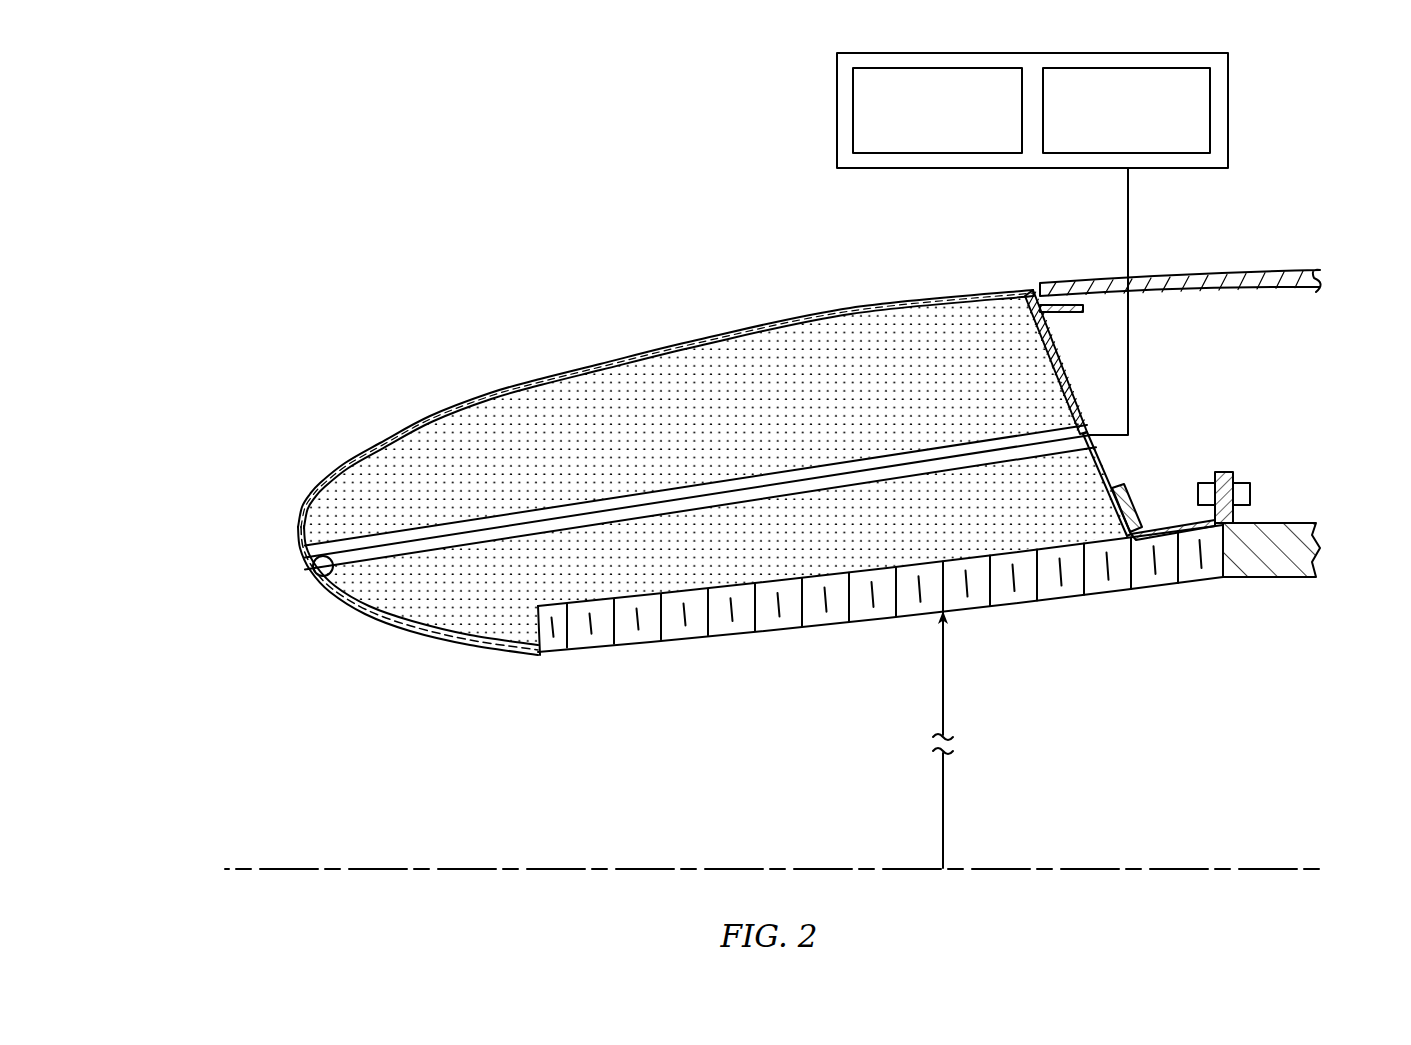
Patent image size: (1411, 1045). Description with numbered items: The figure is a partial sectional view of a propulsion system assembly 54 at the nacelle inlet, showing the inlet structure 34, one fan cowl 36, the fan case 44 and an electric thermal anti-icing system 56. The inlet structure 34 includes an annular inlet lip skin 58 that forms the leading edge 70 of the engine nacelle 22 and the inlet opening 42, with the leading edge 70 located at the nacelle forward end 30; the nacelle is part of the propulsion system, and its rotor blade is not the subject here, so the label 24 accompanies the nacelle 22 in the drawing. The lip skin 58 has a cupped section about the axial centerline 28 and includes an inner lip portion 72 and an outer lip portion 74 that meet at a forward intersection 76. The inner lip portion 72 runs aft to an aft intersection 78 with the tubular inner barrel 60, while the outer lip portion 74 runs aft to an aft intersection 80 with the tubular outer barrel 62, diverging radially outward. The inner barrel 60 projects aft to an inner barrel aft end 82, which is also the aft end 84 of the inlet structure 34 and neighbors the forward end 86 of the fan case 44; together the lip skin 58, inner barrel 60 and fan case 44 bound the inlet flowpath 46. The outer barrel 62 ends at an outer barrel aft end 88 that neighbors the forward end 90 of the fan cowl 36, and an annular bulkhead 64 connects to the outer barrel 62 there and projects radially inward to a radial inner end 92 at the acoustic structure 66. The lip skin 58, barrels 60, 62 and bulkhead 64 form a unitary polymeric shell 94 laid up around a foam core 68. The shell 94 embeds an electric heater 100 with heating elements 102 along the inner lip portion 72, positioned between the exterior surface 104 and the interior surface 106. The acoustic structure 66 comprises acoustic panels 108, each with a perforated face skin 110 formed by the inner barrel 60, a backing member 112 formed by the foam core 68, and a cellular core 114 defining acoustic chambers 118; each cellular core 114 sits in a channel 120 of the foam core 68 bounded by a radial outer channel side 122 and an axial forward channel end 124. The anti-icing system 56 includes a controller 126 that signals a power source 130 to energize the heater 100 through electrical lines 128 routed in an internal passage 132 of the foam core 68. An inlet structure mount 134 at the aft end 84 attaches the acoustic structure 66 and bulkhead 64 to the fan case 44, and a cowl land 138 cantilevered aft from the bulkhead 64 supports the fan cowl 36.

The engine nacelle 22 is at (271, 206).
The rotor blade 24 is at (312, 244).
The axial centerline 28 is at (1300, 865).
The nacelle forward end 30 is at (581, 419).
The inlet structure 34 is at (657, 308).
The fan cowl 36 is at (1180, 239).
The inlet opening 42 is at (297, 762).
The fan case 44 is at (1318, 540).
The inlet flowpath 46 is at (788, 793).
The assembly 54 is at (218, 97).
The electric thermal anti-icing system 56 is at (1282, 118).
The inlet lip skin 58 is at (300, 480).
The inner barrel 60 is at (710, 650).
The outer barrel 62 is at (722, 330).
The bulkhead 64 is at (1066, 373).
The acoustic structure 66 is at (880, 639).
The foam core 68 is at (801, 420).
The leading edge 70 is at (581, 419).
The inner lip portion 72 is at (405, 645).
The outer lip portion 74 is at (393, 430).
The forward intersection 76 is at (298, 525).
The aft intersection 78 is at (538, 642).
The aft intersection 80 is at (490, 393).
The inner barrel aft end 82 is at (1250, 559).
The aft end of the inlet structure 84 is at (1223, 577).
The forward end of the fan case 86 is at (1223, 577).
The outer barrel aft end 88 is at (1032, 285).
The forward end of the fan cowl 90 is at (1228, 266).
The radial inner end of the bulkhead 92 is at (1143, 545).
The shell 94 is at (853, 302).
The electric heater 100 is at (409, 600).
The electric heating elements 102 is at (345, 625).
The exterior surface 104 is at (335, 598).
The interior surface 106 is at (314, 565).
The acoustic panel 108 is at (1008, 618).
The perforated face skin 110 is at (745, 637).
The backing member 112 is at (805, 617).
The cellular core 114 is at (674, 624).
The acoustic chambers 118 is at (910, 602).
The channel 120 is at (1062, 536).
The radial outer channel side 122 is at (602, 610).
The axial forward channel end 124 is at (550, 628).
The controller 126 is at (918, 141).
The electrical lines 128 is at (1130, 405).
The electrical power source 130 is at (1107, 141).
The internal passage 132 is at (677, 497).
The inlet structure mount 134 is at (1172, 521).
The cowl land 138 is at (1085, 310).